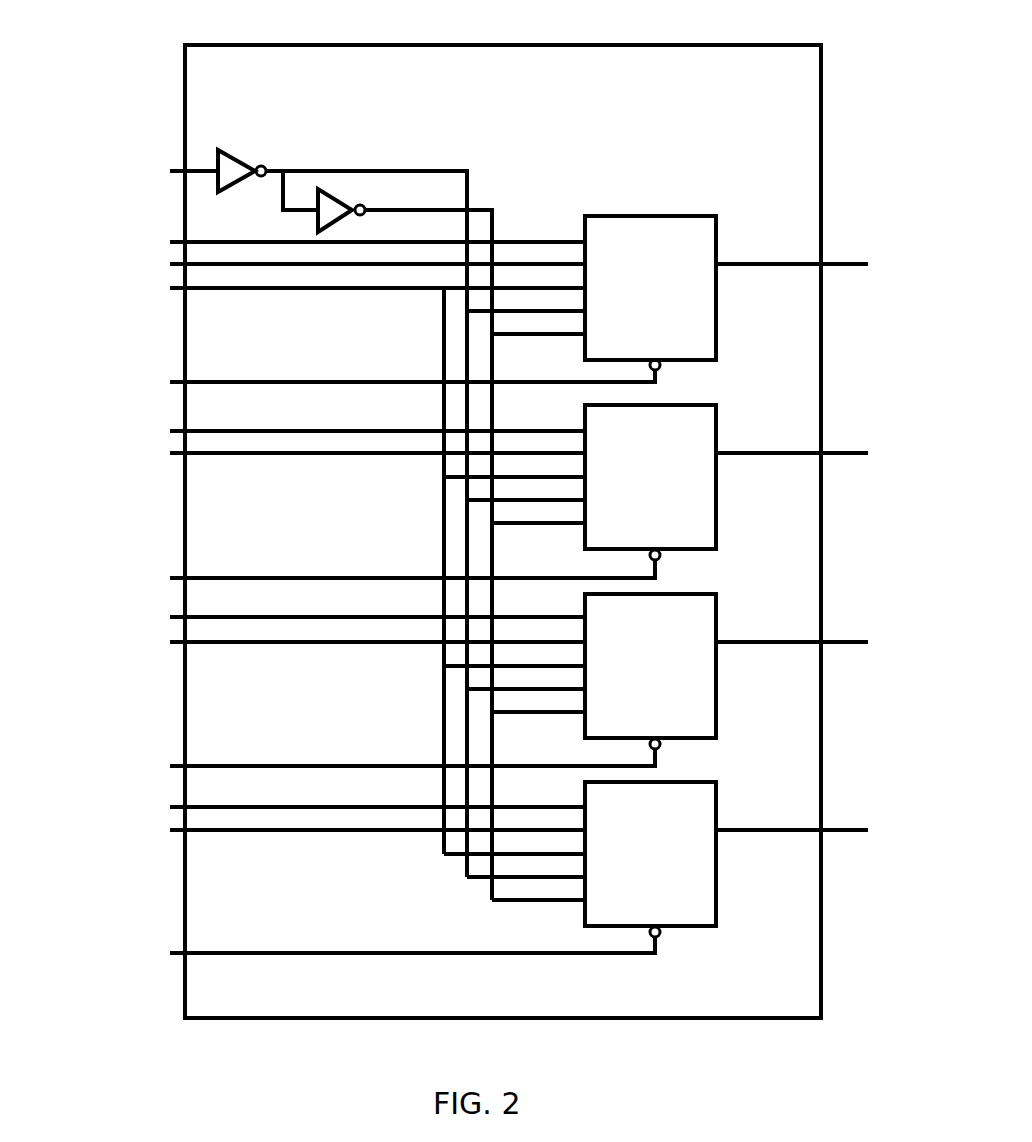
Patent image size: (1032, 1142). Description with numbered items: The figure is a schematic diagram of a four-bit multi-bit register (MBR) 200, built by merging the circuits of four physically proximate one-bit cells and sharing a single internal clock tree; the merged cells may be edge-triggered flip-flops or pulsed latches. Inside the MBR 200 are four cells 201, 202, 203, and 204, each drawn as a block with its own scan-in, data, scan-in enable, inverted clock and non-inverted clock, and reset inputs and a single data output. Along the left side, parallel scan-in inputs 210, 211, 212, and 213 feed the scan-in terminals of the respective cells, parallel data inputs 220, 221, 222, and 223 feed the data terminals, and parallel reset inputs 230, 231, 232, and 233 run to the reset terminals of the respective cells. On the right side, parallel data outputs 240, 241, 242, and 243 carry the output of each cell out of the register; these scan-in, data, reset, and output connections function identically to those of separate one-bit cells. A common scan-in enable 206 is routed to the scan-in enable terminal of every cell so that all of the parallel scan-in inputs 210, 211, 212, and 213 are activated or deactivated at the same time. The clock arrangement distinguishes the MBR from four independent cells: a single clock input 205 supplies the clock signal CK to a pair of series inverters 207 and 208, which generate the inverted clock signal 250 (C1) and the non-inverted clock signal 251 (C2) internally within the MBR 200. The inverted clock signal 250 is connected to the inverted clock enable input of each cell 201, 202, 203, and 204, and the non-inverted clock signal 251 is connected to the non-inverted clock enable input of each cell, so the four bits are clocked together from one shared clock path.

The multi-bit register 200 is at (500, 25).
The cell 201 is at (668, 302).
The cell 202 is at (668, 491).
The cell 203 is at (668, 680).
The cell 204 is at (668, 868).
The clock input 205 is at (130, 166).
The common scan-in enable 206 is at (136, 292).
The inverter 207 is at (225, 180).
The inverter 208 is at (363, 217).
The scan-in input 210 is at (116, 240).
The scan-in input 211 is at (121, 420).
The scan-in input 212 is at (121, 616).
The scan-in input 213 is at (121, 815).
The data input 220 is at (136, 268).
The data input 221 is at (139, 461).
The data input 222 is at (139, 641).
The data input 223 is at (136, 828).
The reset input 230 is at (113, 379).
The reset input 231 is at (111, 572).
The reset input 232 is at (111, 767).
The reset input 233 is at (113, 947).
The data output 240 is at (880, 248).
The data output 241 is at (880, 438).
The data output 242 is at (880, 626).
The data output 243 is at (880, 814).
The inverted clock signal 250 is at (304, 169).
The non-inverted clock signal 251 is at (408, 207).